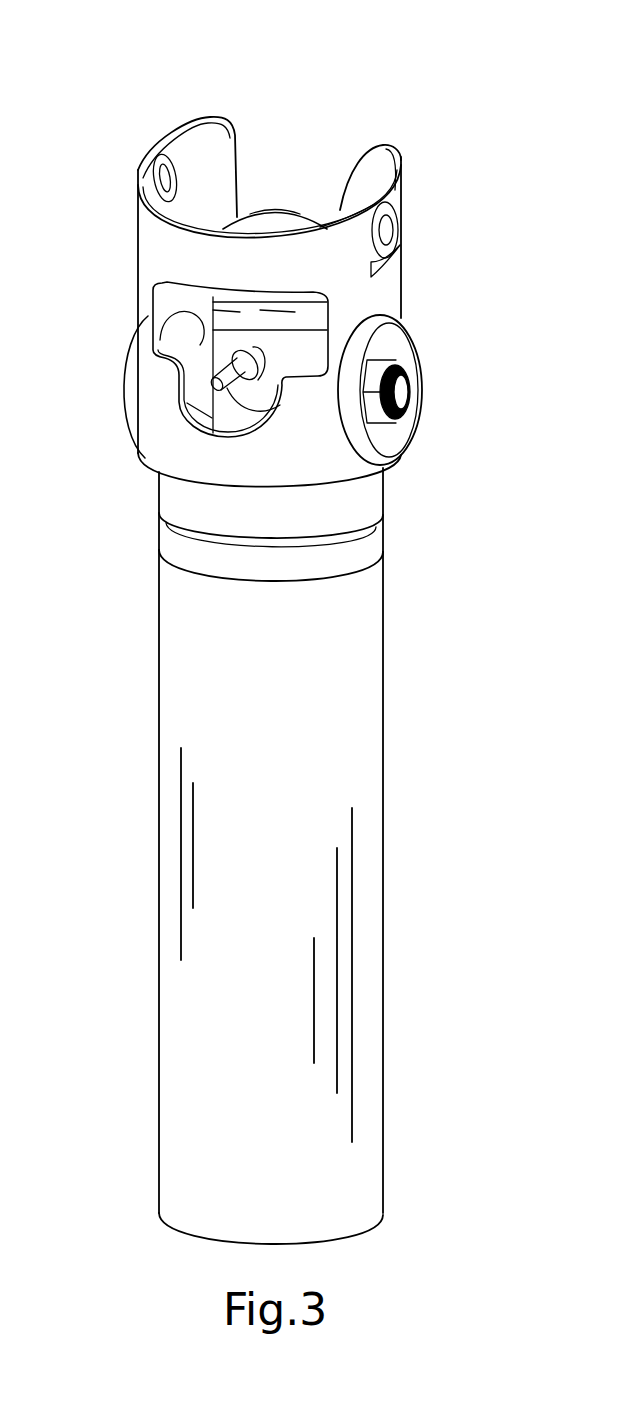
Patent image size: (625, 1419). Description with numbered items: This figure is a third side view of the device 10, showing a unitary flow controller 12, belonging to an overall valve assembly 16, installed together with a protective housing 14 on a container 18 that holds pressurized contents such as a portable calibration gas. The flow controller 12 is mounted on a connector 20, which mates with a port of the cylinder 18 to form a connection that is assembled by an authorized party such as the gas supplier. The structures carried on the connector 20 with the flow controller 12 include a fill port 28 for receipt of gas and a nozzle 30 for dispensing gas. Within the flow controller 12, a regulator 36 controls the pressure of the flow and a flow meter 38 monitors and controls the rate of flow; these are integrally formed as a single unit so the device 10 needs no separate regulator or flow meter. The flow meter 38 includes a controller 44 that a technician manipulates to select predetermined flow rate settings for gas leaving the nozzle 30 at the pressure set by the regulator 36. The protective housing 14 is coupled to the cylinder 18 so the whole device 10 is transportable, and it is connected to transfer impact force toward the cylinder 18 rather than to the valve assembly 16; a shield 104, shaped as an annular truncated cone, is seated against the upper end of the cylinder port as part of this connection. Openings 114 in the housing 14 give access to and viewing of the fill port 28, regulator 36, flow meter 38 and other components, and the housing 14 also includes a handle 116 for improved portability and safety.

The device 10 is at (120, 60).
The flow controller 12 is at (293, 205).
The protective housing 14 is at (180, 126).
The valve assembly 16 is at (176, 327).
The container 18 is at (198, 682).
The connector 20 is at (294, 345).
The fill port 28 is at (421, 377).
The nozzle 30 is at (230, 388).
The regulator 36 is at (237, 318).
The flow meter 38 is at (277, 308).
The controller 44 is at (274, 222).
The shield 104 is at (369, 516).
The openings 114 is at (347, 128).
The handle 116 is at (183, 248).